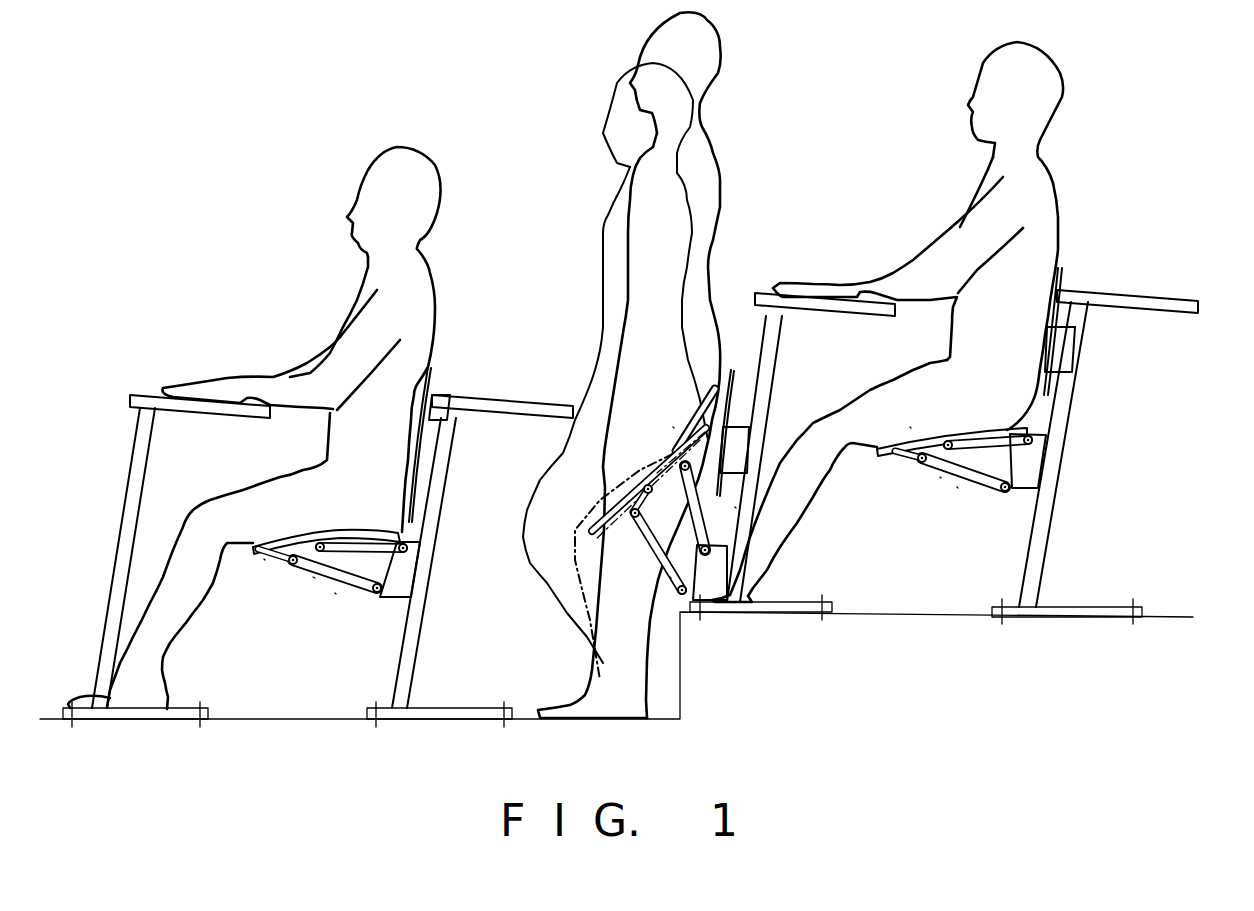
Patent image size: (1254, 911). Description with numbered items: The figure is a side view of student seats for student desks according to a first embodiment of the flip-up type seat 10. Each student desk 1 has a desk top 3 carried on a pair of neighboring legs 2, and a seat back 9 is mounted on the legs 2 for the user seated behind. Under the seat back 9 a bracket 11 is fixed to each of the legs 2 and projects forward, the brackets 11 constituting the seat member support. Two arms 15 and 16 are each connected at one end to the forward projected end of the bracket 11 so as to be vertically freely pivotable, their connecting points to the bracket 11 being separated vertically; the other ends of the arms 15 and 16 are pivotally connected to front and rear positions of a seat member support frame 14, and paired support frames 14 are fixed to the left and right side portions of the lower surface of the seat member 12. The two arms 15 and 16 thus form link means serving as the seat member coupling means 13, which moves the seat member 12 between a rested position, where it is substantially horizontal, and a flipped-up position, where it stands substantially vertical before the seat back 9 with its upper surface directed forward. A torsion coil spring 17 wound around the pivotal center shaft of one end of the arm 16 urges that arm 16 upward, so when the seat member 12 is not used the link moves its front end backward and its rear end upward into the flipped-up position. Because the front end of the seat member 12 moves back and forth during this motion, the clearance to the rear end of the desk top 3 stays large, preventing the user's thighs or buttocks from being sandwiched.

The student desk 1 is at (120, 427).
The leg 2 is at (118, 553).
The desk top 3 is at (193, 418).
The seat back 9 is at (416, 394).
The flip-up type seat 10 is at (256, 568).
The bracket 11 is at (413, 582).
The seat member 12 is at (353, 533).
The seat member coupling means 13 is at (335, 593).
The seat member support frame 14 is at (283, 558).
The arm 15 is at (313, 577).
The arm 16 is at (362, 557).
The torsion coil spring 17 is at (430, 545).